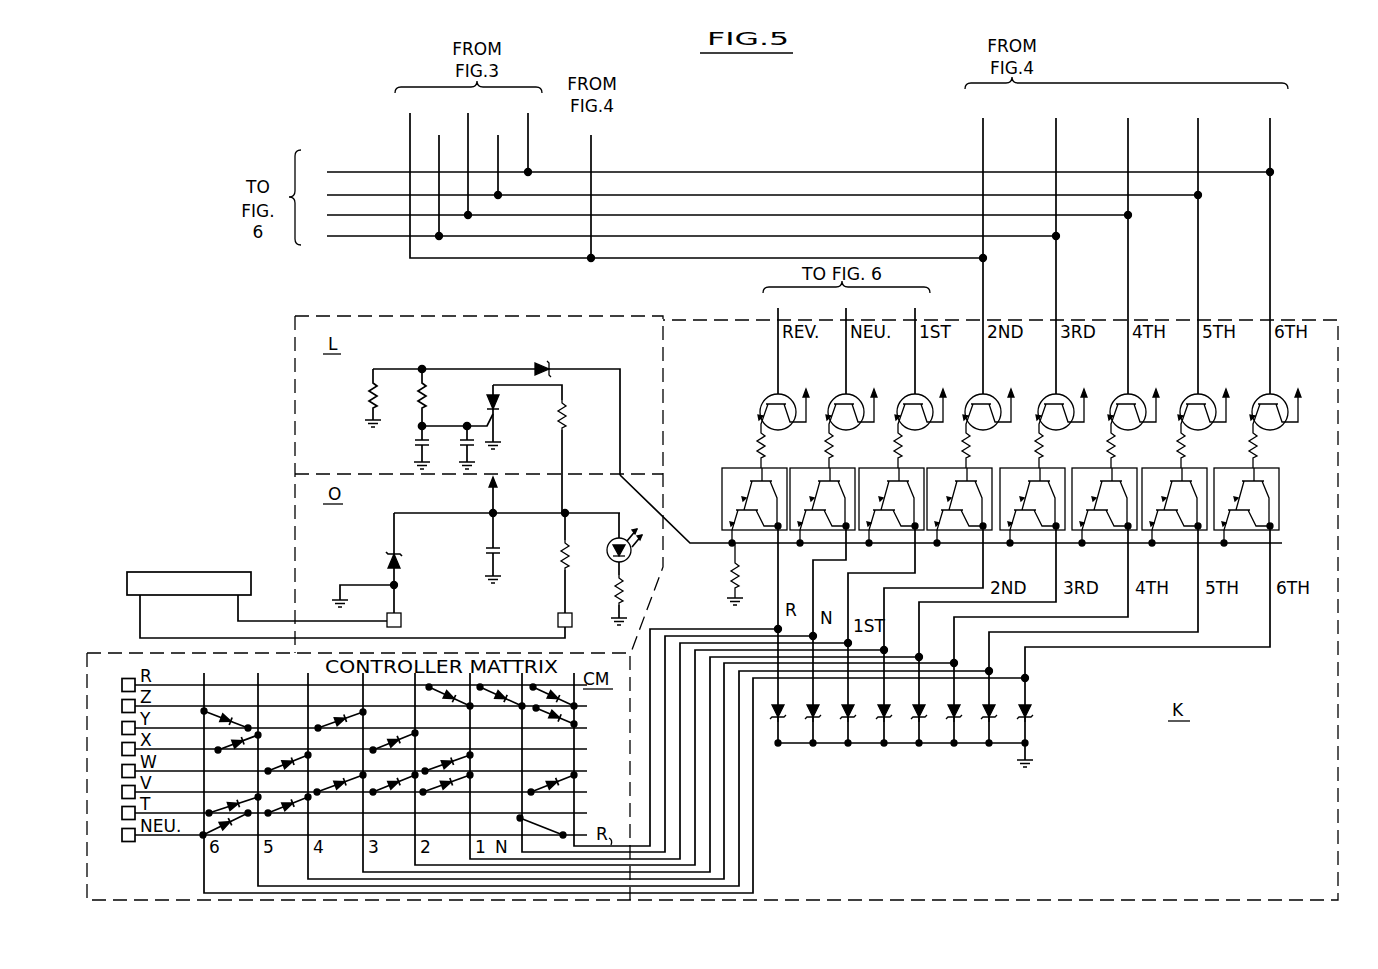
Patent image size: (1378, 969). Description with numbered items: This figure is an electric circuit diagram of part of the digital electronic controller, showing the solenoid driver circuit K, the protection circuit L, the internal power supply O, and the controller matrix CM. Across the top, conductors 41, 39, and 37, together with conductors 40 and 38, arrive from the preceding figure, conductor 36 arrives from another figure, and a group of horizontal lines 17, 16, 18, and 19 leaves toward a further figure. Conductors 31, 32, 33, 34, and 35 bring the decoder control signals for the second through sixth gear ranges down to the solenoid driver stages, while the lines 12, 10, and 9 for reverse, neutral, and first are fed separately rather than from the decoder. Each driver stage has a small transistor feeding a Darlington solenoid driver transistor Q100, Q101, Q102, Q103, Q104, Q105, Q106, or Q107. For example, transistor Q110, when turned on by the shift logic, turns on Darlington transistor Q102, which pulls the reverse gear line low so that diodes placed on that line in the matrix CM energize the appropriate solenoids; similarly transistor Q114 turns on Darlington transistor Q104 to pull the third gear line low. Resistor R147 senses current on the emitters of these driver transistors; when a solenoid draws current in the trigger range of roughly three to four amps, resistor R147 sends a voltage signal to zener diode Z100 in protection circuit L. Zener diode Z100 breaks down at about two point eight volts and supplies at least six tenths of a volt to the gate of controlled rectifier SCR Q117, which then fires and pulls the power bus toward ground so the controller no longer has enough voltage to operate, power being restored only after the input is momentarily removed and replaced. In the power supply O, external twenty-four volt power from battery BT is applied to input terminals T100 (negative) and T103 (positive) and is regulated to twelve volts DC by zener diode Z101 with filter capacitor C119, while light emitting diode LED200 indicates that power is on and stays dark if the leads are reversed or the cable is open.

The conductor to FIG. 6 (1ST) 9 is at (915, 340).
The conductor to FIG. 6 (NEU) 10 is at (846, 340).
The conductor to FIG. 6 (REV) 12 is at (778, 340).
The conductor to FIG. 6 16 is at (750, 195).
The conductor to FIG. 6 17 is at (786, 172).
The conductor to FIG. 6 18 is at (715, 215).
The conductor to FIG. 6 19 is at (679, 236).
The conductor from FIG. 4 31 is at (983, 245).
The conductor from FIG. 4 32 is at (1056, 245).
The conductor from FIG. 4 33 is at (1128, 245).
The conductor from FIG. 4 34 is at (1198, 245).
The conductor from FIG. 4 35 is at (1270, 245).
The conductor from FIG. 4 36 is at (592, 188).
The conductor from FIG. 3 37 is at (528, 134).
The conductor from FIG. 3 38 is at (498, 157).
The conductor from FIG. 3 39 is at (468, 155).
The conductor from FIG. 3 40 is at (439, 177).
The conductor from FIG. 3 41 is at (691, 175).
The transistor Q110 is at (766, 396).
The transistor Q114 is at (1050, 396).
The solenoid driver transistor Q100 is at (887, 460).
The solenoid driver transistor Q101 is at (818, 460).
The Darlington transistor Q102 is at (750, 460).
The solenoid driver transistor Q103 is at (955, 460).
The Darlington transistor Q104 is at (1028, 460).
The solenoid driver transistor Q105 is at (1100, 460).
The solenoid driver transistor Q106 is at (1170, 460).
The solenoid driver transistor Q107 is at (1242, 460).
The controlled rectifier SCR Q117 is at (525, 449).
The resistor R147 is at (714, 574).
The zener diode Z100 is at (544, 358).
The zener diode Z101 is at (389, 563).
The filter capacitor C119 is at (514, 548).
The light emitting diode LED200 is at (607, 569).
The input terminal T100 is at (416, 621).
The input terminal T103 is at (539, 621).
The battery BT is at (172, 572).